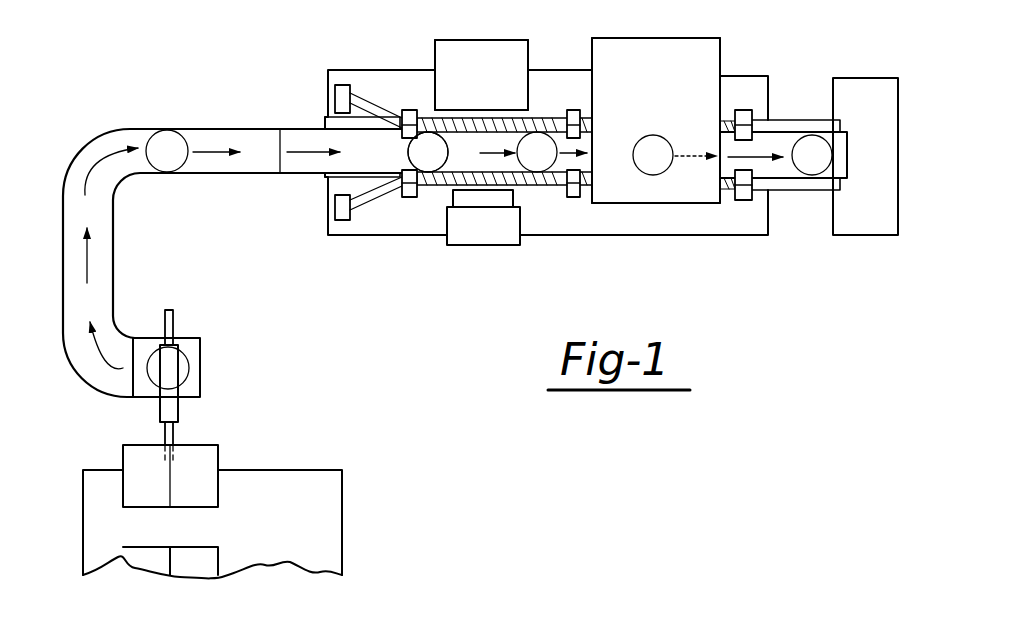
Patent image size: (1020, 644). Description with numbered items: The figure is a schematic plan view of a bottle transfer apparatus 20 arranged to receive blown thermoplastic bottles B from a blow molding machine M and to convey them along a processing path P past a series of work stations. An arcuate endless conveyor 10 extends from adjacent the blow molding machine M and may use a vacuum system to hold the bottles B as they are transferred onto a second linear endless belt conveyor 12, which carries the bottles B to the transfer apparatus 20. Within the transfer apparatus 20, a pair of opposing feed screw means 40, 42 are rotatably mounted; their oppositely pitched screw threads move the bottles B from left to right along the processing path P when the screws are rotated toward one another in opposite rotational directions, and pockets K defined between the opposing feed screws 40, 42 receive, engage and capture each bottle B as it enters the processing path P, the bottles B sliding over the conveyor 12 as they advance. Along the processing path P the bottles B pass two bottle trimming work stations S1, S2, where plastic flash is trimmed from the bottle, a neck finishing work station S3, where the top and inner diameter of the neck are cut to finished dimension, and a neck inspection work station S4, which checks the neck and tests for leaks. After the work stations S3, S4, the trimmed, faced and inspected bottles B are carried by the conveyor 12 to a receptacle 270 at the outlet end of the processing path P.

The endless conveyor 10 is at (212, 171).
The linear endless belt conveyor 12 is at (293, 171).
The transfer apparatus 20 is at (444, 253).
The feed screw means 40 is at (433, 184).
The feed screw means 42 is at (433, 116).
The receptacle 270 is at (877, 87).
The bottle B is at (157, 131).
The pocket K is at (442, 136).
The processing path P is at (553, 180).
The blow molding machine M is at (273, 483).
The bottle trimming work station S1 is at (450, 100).
The bottle trimming work station S2 is at (497, 100).
The neck finishing work station S3 is at (628, 104).
The neck inspection work station S4 is at (685, 104).